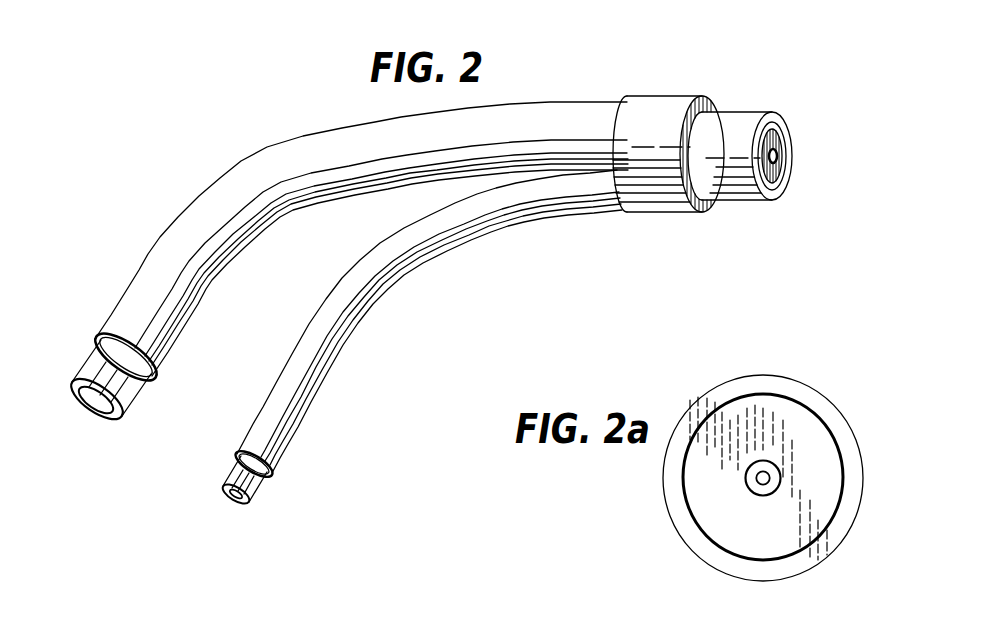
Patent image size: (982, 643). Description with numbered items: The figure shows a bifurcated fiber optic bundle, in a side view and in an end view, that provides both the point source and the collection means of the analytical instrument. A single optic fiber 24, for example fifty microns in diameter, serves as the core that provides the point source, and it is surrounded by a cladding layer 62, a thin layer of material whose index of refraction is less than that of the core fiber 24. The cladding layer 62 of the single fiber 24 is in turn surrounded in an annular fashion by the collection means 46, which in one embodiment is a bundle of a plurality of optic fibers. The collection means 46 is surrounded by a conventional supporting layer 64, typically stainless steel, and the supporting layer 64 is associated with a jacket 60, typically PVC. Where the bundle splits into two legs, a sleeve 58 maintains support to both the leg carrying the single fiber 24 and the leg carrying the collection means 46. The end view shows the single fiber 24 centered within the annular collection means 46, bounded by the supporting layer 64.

In FIG. 2, the single optic fiber 24 is at (778, 159).
In FIG. 2A, the single optic fiber 24 is at (772, 478).
In FIG. 2, the collection means 46 is at (765, 122).
In FIG. 2A, the collection means 46 is at (820, 508).
In FIG. 2, the sleeve 58 is at (668, 100).
In FIG. 2, the jacket 60 is at (281, 216).
In FIG. 2, the cladding layer 62 is at (222, 488).
In FIG. 2A, the cladding layer 62 is at (755, 494).
In FIG. 2, the supporting layer 64 is at (96, 421).
In FIG. 2A, the supporting layer 64 is at (824, 563).